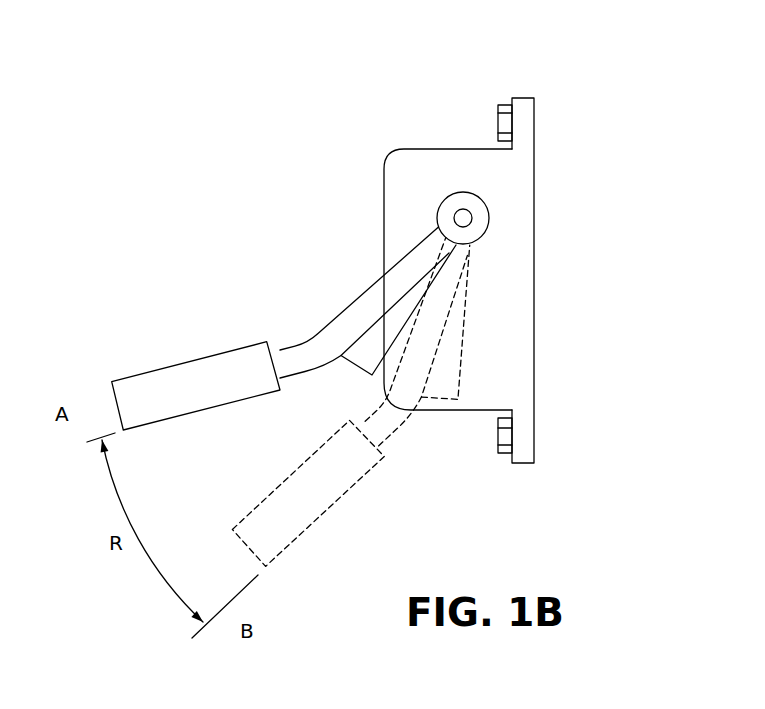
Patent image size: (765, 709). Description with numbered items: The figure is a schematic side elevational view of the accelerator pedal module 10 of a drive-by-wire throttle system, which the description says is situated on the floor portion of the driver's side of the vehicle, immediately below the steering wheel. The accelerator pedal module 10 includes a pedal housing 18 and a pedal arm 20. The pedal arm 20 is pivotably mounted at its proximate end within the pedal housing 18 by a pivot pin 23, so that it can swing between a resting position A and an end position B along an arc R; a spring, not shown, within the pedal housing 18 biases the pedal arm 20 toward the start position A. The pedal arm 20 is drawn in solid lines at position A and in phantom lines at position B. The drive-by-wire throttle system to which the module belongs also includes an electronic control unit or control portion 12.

The control lever assembly 10 is at (237, 140).
The handle 12 is at (176, 371).
The mounting bracket 18 is at (442, 160).
The lever arm 20 is at (357, 317).
The pivot 23 is at (453, 217).